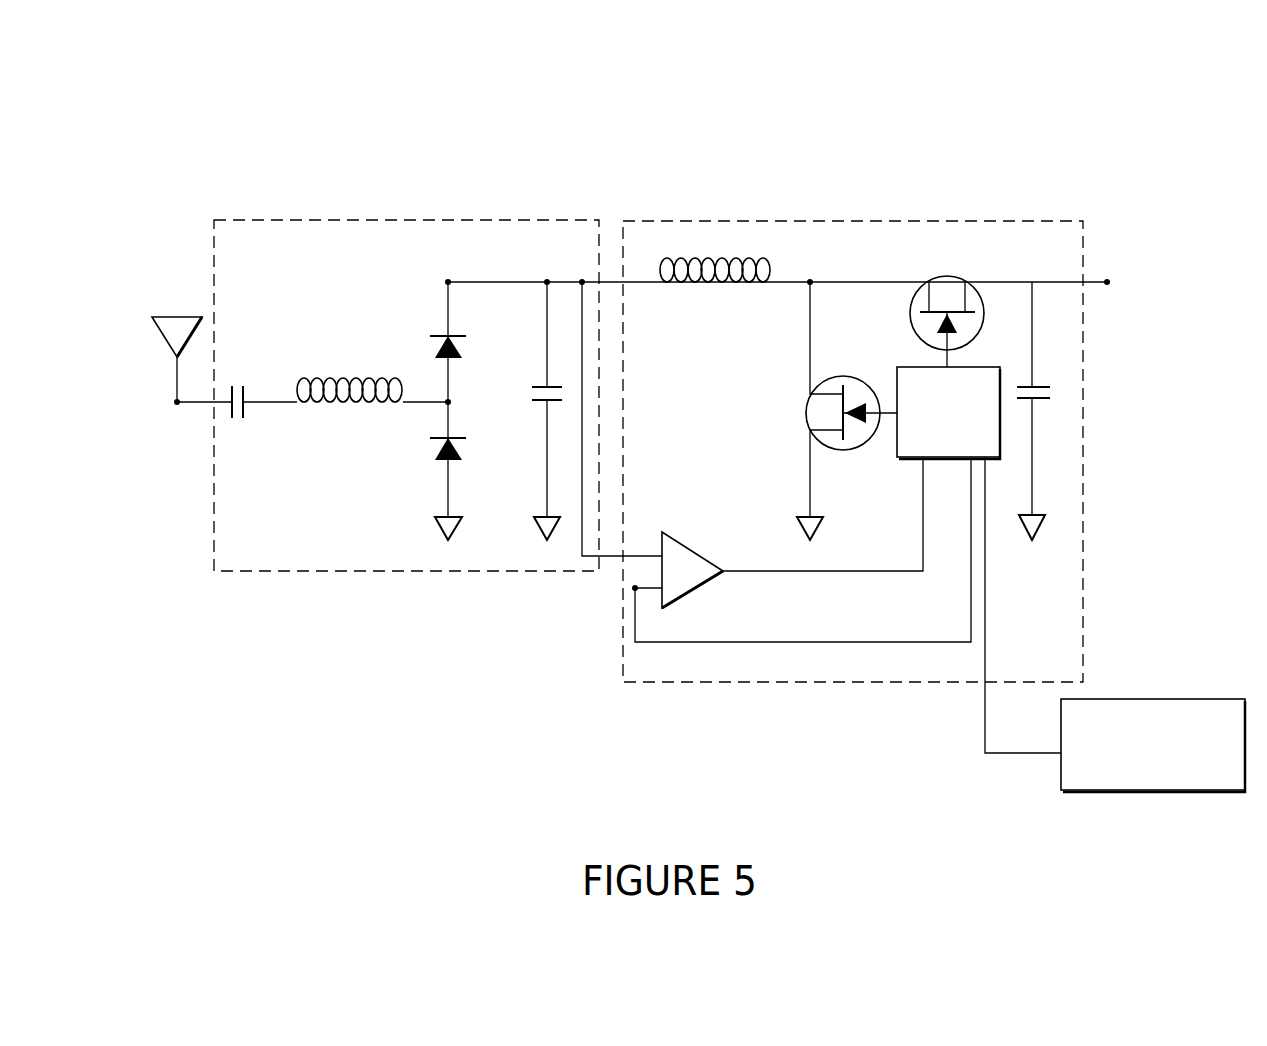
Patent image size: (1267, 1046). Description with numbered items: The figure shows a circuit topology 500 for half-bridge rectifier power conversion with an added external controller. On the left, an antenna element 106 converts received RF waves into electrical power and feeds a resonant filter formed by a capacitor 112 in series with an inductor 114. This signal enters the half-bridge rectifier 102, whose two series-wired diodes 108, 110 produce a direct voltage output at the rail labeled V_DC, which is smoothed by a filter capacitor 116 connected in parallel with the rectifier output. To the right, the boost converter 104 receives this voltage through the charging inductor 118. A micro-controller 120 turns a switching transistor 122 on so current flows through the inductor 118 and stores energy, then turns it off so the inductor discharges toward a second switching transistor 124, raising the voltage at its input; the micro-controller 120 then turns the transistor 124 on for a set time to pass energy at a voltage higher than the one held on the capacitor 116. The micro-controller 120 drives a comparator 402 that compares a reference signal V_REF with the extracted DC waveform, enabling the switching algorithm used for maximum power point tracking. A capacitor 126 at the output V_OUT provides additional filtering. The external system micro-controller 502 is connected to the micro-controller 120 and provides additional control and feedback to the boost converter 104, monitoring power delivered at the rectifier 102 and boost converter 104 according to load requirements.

The circuit topology 500 is at (305, 162).
The rectifier 102 is at (413, 220).
The boost converter 104 is at (760, 686).
The antenna element 106 is at (177, 317).
The diode 108 is at (455, 335).
The diode 110 is at (475, 440).
The capacitor 112 is at (243, 395).
The inductor 114 is at (314, 410).
The filter capacitor 116 is at (545, 400).
The charging inductor 118 is at (742, 258).
The micro-controller 120 is at (950, 458).
The switching transistor 122 is at (838, 378).
The switching transistor 124 is at (978, 290).
The capacitor 126 is at (1040, 385).
The comparator 402 is at (683, 595).
The system micro-controller 502 is at (1153, 699).